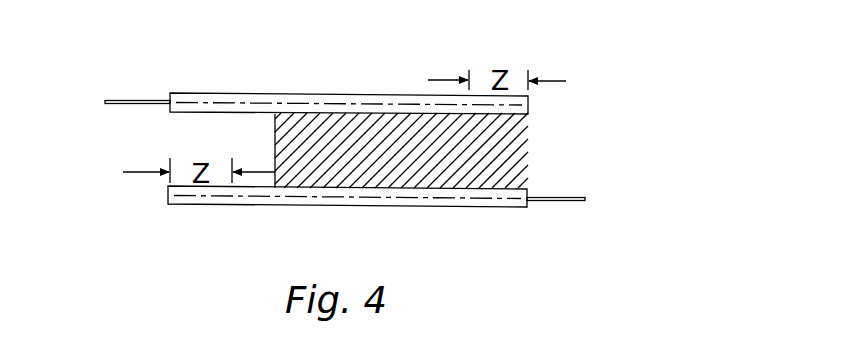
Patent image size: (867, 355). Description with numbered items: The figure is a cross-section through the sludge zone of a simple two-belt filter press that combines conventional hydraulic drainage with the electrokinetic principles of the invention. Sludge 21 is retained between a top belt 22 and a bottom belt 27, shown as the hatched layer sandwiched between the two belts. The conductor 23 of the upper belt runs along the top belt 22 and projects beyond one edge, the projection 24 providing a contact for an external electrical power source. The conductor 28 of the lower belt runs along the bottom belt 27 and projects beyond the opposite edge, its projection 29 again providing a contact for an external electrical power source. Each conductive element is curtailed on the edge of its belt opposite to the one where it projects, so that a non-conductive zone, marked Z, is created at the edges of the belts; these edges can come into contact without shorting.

The sludge 21 is at (450, 160).
The top belt 22 is at (528, 103).
The conductor of the upper belt 23 is at (292, 103).
The projection 24 is at (142, 100).
The bottom belt 27 is at (168, 197).
The conductor of the lower belt 28 is at (500, 197).
The projection 29 is at (585, 203).